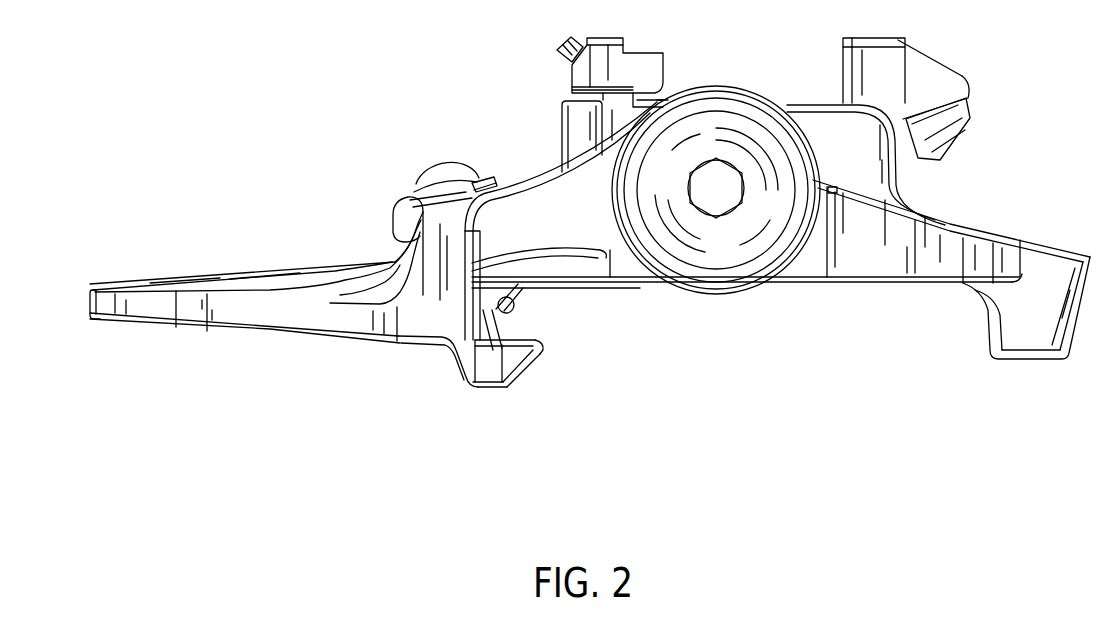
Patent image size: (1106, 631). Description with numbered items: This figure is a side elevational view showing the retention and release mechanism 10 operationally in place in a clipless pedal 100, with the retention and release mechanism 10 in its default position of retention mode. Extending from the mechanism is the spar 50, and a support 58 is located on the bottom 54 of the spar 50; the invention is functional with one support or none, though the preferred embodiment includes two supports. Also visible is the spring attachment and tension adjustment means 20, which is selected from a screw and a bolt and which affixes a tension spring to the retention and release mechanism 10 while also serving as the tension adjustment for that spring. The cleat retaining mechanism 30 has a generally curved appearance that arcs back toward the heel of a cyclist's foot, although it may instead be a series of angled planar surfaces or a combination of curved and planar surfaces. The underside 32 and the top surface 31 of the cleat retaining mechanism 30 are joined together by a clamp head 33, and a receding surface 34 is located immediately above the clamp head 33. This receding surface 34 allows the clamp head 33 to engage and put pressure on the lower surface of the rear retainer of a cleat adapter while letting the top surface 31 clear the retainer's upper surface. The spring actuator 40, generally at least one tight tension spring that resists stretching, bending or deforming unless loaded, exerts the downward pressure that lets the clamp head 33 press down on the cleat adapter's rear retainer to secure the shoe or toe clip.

The retention and release mechanism 10 is at (284, 403).
The spring attachment and tension adjustment means 20 is at (447, 162).
The cleat retaining mechanism 30 is at (480, 366).
The top surface 31 is at (495, 391).
The underside 32 is at (534, 339).
The clamp head 33 is at (545, 352).
The receding surface 34 is at (530, 376).
The spring actuator 40 is at (516, 308).
The spar 50 is at (205, 332).
The bottom 54 is at (134, 283).
The support 58 is at (283, 265).
The clipless pedal 100 is at (1030, 361).